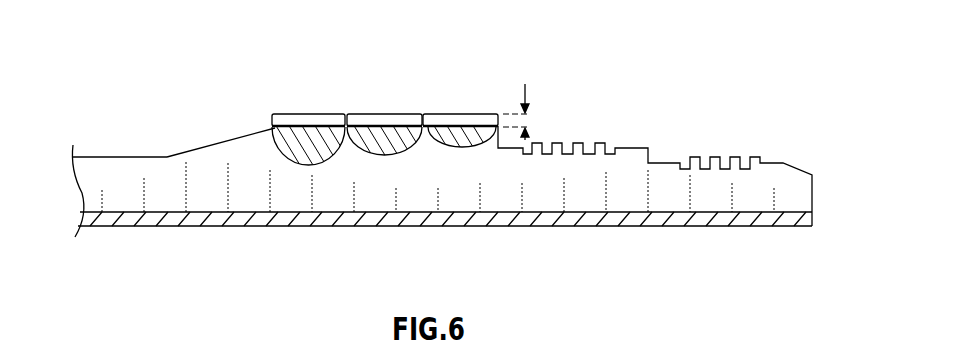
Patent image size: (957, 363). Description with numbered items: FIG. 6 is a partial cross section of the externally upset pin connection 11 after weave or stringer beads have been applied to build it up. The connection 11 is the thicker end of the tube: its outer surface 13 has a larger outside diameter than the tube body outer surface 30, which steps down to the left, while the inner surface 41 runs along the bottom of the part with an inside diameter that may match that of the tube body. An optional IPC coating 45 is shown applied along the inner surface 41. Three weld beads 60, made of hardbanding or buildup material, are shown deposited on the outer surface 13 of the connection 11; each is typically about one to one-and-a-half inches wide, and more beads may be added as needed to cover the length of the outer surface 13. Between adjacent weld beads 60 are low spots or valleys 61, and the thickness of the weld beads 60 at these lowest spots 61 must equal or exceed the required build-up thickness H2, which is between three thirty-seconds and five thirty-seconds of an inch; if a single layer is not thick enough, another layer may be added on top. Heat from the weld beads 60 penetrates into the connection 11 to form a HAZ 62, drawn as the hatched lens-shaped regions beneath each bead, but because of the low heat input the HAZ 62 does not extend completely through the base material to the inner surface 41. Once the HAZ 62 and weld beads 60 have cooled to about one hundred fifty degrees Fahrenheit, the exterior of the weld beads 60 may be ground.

The externally upset pin connection 11 is at (433, 157).
The tube body outer surface 30 is at (118, 157).
The HAZ 62 is at (272, 128).
The weld beads 60 is at (310, 113).
The valleys 61 is at (425, 113).
The outer surface 13 is at (441, 130).
The inner surface 41 is at (651, 212).
The IPC coating 45 is at (297, 218).
The thickness H2 is at (523, 95).